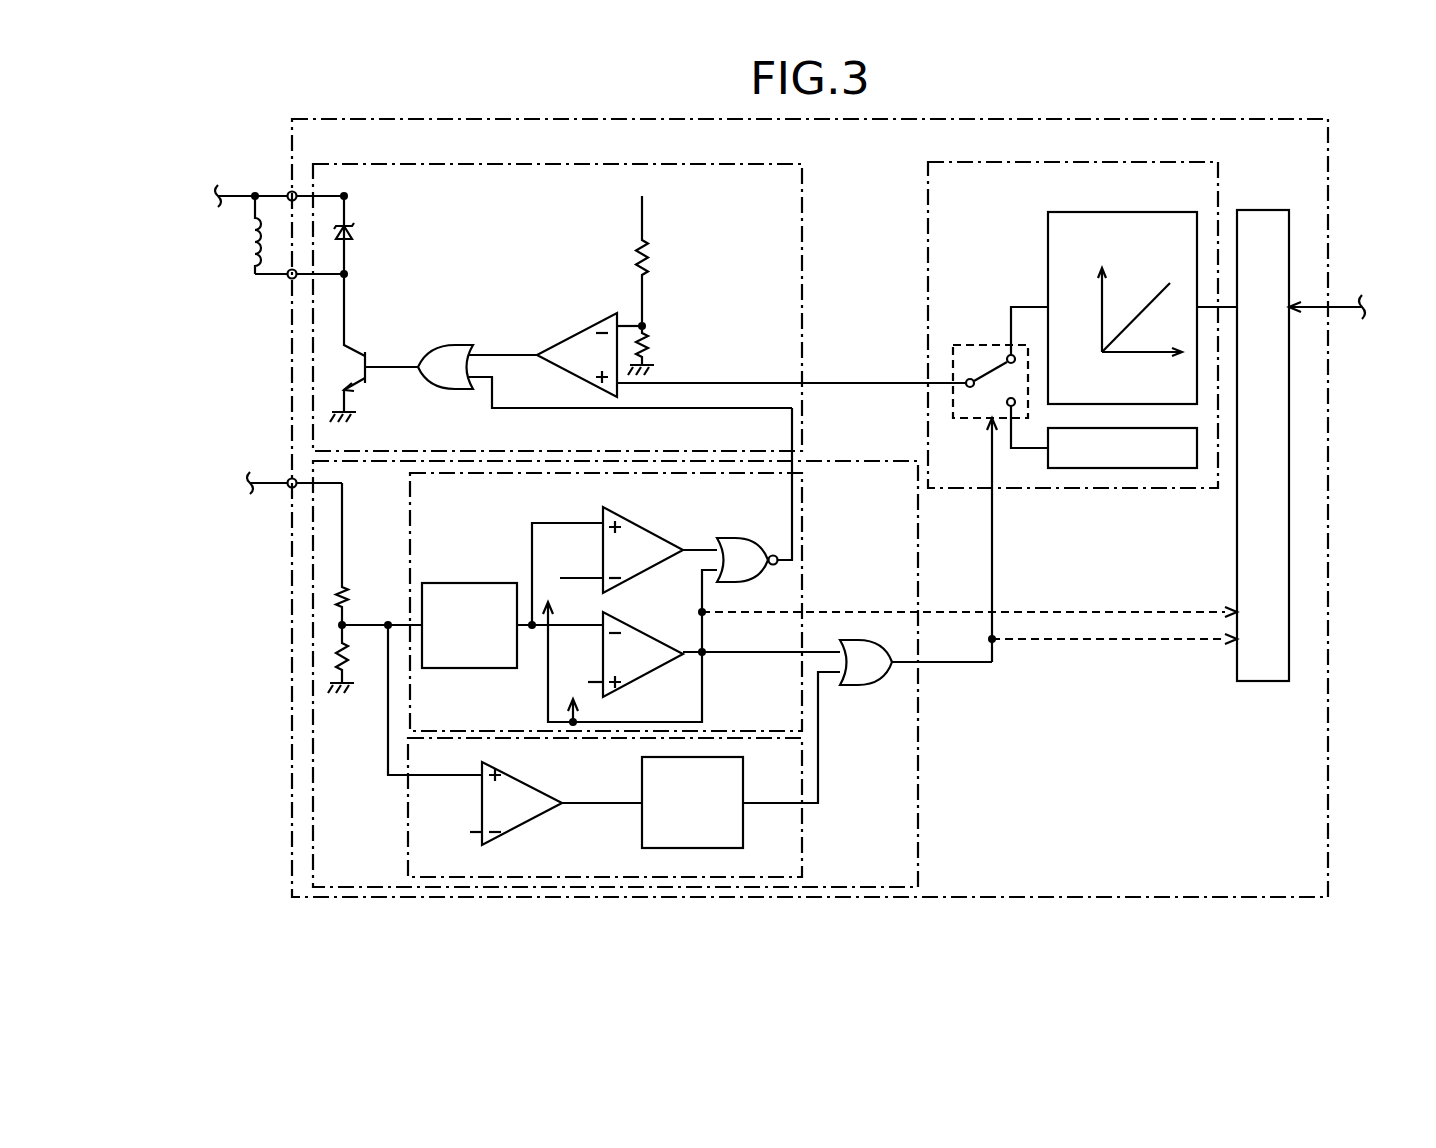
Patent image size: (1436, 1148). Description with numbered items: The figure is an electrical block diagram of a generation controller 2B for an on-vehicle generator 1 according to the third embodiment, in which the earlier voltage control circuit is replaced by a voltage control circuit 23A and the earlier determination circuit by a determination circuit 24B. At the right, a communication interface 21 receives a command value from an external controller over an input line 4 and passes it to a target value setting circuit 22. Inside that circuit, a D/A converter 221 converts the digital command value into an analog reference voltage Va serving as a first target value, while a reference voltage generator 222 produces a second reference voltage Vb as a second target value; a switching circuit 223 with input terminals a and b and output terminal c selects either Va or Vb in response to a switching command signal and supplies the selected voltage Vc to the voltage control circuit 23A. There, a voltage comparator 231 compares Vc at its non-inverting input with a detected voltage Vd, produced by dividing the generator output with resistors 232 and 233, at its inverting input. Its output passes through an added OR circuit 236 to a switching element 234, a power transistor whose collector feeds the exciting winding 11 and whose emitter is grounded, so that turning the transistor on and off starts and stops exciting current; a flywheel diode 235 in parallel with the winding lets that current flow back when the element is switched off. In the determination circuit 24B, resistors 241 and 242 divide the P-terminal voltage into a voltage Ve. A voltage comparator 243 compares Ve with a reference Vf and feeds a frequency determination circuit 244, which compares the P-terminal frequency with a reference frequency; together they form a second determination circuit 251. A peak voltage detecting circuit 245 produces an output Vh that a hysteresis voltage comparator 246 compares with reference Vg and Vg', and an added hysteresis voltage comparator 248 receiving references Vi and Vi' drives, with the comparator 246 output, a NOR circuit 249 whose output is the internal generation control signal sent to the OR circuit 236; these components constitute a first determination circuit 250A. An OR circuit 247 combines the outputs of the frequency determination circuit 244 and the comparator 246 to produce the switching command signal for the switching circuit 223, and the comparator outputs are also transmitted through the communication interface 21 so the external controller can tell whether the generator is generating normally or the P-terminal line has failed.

The generator 1 is at (243, 128).
The exciting winding 11 is at (251, 236).
The generation controller 2B is at (1328, 748).
The external control unit input 4 is at (1349, 308).
The communication interface 21 is at (1289, 200).
The target value setting circuit 22 is at (1102, 150).
The D/A converter 221 is at (1147, 200).
The reference voltage generator 222 is at (1120, 468).
The switching circuit 223 is at (975, 347).
The voltage control circuit 23A is at (734, 152).
The voltage comparator 231 is at (580, 329).
The resistor 232 is at (648, 258).
The resistor 233 is at (648, 346).
The switching element 234 is at (353, 348).
The flywheel diode 235 is at (352, 233).
The OR circuit 236 is at (453, 345).
The determination circuit 24B is at (918, 812).
The resistor 241 is at (352, 586).
The resistor 242 is at (350, 657).
The voltage comparator 243 is at (538, 801).
The frequency determination circuit 244 is at (640, 831).
The peak voltage detecting circuit 245 is at (465, 583).
The voltage comparator 246 is at (648, 626).
The OR circuit 247 is at (857, 687).
The voltage comparator 248 is at (648, 523).
The NOR circuit 249 is at (736, 538).
The first determination circuit 250A is at (802, 526).
The second determination circuit 251 is at (802, 862).